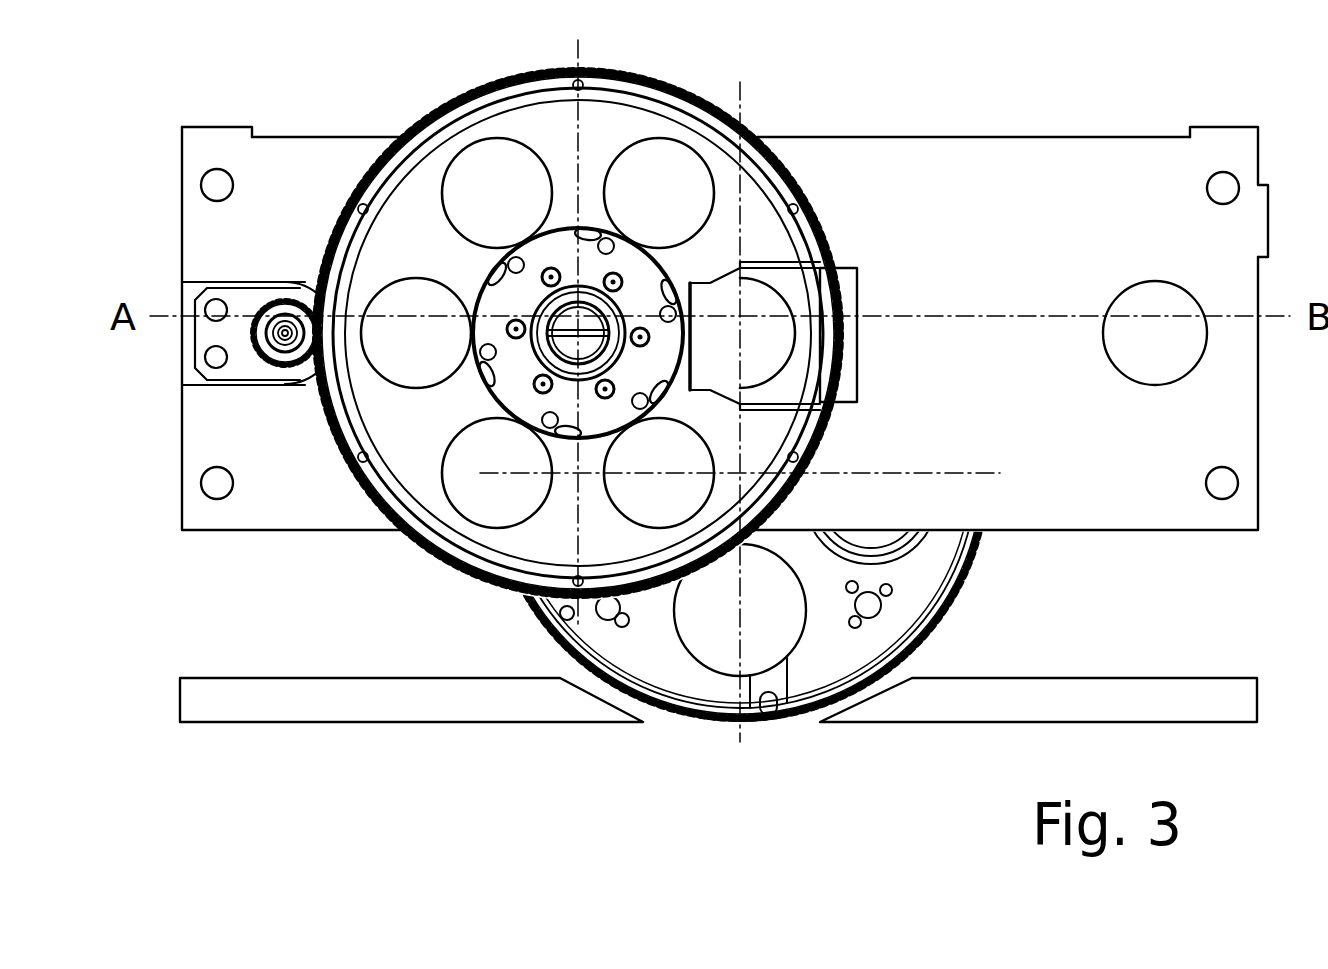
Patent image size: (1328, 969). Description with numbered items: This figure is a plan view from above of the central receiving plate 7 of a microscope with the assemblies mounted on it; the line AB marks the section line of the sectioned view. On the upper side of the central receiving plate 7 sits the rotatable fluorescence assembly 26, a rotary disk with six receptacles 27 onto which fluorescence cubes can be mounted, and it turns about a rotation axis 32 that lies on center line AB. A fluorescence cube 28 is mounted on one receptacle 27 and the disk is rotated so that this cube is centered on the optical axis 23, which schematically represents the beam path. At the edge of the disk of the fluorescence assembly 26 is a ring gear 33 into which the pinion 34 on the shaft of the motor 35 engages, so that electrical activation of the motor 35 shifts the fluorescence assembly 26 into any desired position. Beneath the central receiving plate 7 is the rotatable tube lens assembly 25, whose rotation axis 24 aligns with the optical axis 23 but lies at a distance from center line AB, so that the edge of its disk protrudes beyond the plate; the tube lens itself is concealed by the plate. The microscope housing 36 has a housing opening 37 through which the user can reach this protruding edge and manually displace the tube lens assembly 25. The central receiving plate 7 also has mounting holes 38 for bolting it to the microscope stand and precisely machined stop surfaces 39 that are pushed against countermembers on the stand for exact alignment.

The central receiving plate 7 is at (975, 168).
The optical axis 23 is at (742, 335).
The rotation axis 24 is at (750, 473).
The rotatable tube lens assembly 25 is at (922, 582).
The rotatable fluorescence assembly 26 is at (607, 125).
The receptacle 27 is at (612, 240).
The fluorescence cube 28 is at (838, 305).
The rotation axis 32 is at (577, 328).
The ring gear 33 is at (480, 85).
The pinion 34 is at (288, 290).
The motor 35 is at (276, 382).
The microscope housing 36 is at (1095, 698).
The housing opening 37 is at (722, 738).
The mounting holes 38 is at (217, 185).
The stop surfaces 39 is at (217, 127).